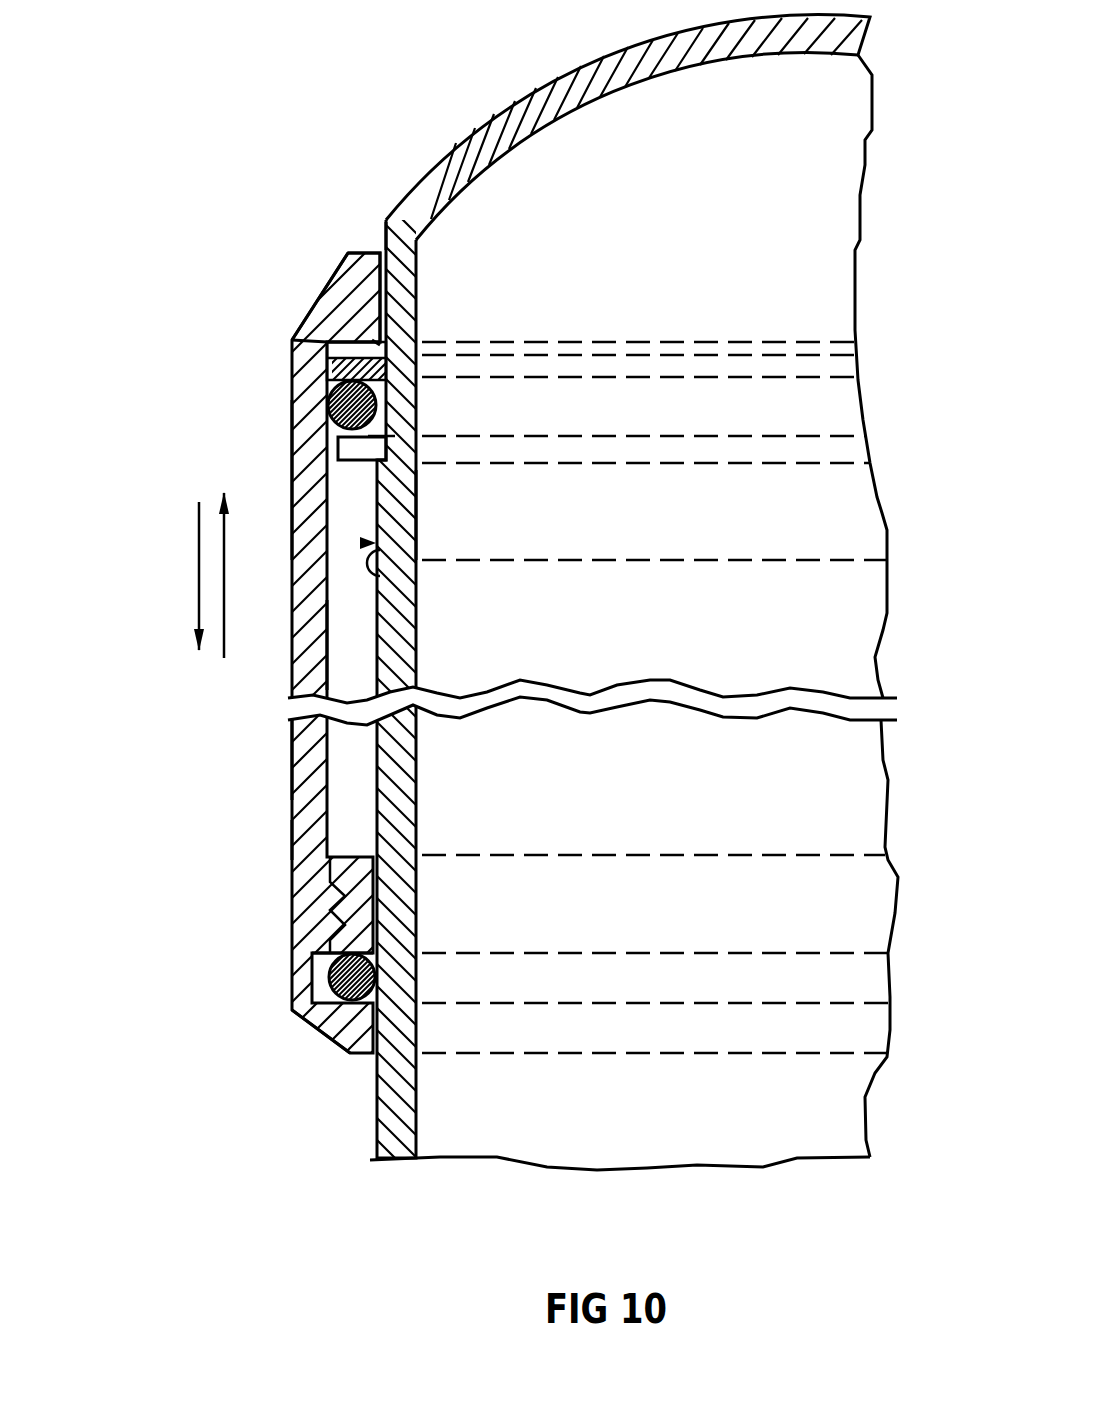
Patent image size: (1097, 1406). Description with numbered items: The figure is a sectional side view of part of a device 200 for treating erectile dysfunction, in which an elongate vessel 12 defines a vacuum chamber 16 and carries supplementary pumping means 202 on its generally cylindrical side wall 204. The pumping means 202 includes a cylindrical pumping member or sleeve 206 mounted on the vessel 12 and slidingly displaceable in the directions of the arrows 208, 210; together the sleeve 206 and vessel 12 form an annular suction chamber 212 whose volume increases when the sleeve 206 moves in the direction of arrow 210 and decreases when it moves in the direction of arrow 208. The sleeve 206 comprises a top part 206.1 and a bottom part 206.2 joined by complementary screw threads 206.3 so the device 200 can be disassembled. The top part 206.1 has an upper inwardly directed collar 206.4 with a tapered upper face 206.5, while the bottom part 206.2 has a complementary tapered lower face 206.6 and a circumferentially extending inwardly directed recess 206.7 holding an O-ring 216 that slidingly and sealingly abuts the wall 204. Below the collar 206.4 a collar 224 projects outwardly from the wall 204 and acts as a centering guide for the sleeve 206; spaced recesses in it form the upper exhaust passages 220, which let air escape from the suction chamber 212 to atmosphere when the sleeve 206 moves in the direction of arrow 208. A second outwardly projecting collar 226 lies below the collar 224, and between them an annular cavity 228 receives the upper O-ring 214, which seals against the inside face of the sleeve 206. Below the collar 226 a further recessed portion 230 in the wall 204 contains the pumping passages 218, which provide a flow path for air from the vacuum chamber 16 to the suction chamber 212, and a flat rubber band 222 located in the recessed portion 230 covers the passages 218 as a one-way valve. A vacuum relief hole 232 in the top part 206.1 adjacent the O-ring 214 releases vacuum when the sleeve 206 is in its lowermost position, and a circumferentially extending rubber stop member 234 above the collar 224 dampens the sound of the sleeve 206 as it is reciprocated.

The vessel 12 is at (355, 1110).
The vacuum chamber 16 is at (720, 410).
The device for use in the treatment of erectile dysfunction 200 is at (235, 150).
The supplementary pumping means 202 is at (272, 832).
The side wall 204 is at (397, 795).
The pumping member or sleeve 206 is at (273, 923).
The top part of the sleeve 206.1 is at (308, 757).
The bottom part of the sleeve 206.2 is at (337, 938).
The screw threads 206.3 is at (333, 902).
The inwardly directed collar 206.4 is at (340, 342).
The tapered upper face 206.5 is at (292, 333).
The tapered lower face 206.6 is at (325, 1040).
The recess 206.7 is at (380, 950).
The arrow 208 is at (217, 550).
The arrow 210 is at (199, 592).
The suction chamber 212 is at (355, 637).
The O-ring 214 is at (328, 414).
The O-ring 216 is at (338, 985).
The pumping passages 218 is at (418, 512).
The upper exhaust passages 220 is at (340, 322).
The flat rubber band 222 is at (395, 481).
The collar 224 is at (328, 372).
The second outwardly projecting collar 226 is at (368, 436).
The annular cavity 228 is at (355, 428).
The recessed portion 230 is at (380, 576).
The vacuum relief hole 232 is at (288, 472).
The rubber stop member 234 is at (418, 335).